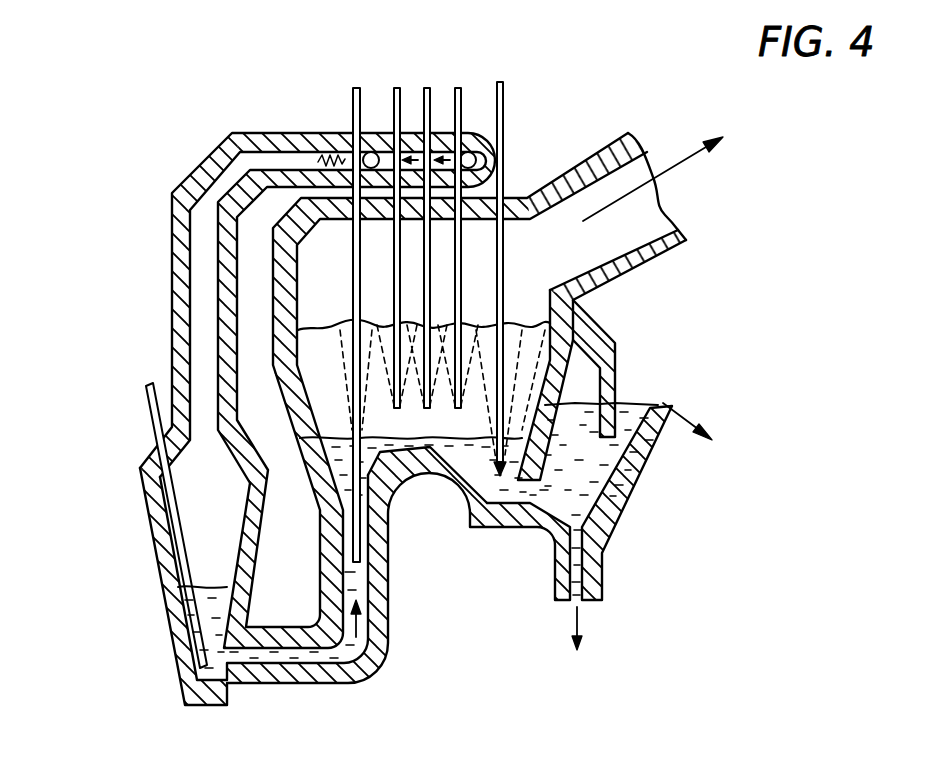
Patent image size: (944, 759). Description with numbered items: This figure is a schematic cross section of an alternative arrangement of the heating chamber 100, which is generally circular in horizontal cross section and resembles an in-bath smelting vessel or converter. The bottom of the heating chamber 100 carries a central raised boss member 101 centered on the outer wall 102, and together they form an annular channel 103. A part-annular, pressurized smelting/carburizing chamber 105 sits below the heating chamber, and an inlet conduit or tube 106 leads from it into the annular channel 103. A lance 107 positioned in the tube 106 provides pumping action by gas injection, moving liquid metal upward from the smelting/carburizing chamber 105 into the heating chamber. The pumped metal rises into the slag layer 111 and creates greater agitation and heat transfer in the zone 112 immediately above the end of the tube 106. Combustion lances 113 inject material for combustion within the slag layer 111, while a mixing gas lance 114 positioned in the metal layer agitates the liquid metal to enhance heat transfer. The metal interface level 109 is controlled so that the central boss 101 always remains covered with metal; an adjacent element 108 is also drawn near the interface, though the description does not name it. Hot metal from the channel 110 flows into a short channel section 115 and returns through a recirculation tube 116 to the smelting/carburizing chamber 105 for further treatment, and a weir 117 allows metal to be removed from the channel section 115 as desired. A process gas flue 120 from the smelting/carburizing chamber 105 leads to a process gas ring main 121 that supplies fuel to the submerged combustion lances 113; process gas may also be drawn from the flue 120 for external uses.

The heating chamber 100 is at (522, 195).
The central raised boss member 101 is at (436, 463).
The outer wall 102 is at (282, 372).
The annular channel 103 is at (345, 465).
The smelting/carburizing chamber 105 is at (150, 532).
The inlet conduit or tube 106 is at (358, 583).
The lance 107 is at (351, 99).
The baffle plate 108 is at (445, 447).
The metal interface level 109 is at (468, 436).
The channel 110 is at (480, 527).
The slag layer 111 is at (318, 342).
The zone 112 is at (347, 437).
The injection lances 113 is at (467, 72).
The gas injection lance 114 is at (505, 102).
The short channel section 115 is at (586, 480).
The recirculation tube 116 is at (560, 602).
The weir 117 is at (615, 395).
The process gas flue 120 is at (207, 260).
The process gas ring main 121 is at (365, 161).